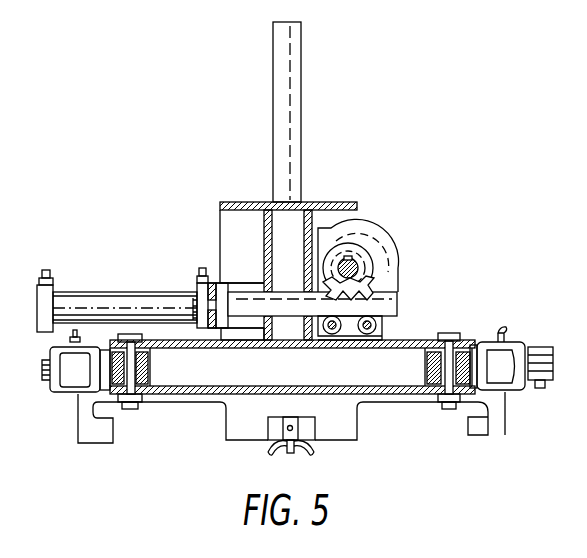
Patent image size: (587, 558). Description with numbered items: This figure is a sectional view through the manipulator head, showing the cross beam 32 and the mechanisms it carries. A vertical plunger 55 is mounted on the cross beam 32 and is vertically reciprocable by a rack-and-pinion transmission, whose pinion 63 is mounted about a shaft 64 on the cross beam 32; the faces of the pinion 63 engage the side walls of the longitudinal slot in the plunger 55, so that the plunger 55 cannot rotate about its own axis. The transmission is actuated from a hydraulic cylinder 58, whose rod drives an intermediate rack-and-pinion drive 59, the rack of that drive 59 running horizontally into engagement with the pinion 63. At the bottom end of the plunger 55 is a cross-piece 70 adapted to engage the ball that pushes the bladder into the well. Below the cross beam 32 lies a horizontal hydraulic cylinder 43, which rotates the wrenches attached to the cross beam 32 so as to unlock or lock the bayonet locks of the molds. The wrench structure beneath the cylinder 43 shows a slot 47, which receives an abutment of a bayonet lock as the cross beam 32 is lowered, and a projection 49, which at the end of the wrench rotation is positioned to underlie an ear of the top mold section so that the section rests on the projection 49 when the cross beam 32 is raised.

The plunger 55 is at (278, 106).
The cross beam 32 is at (237, 180).
The pinion 63 is at (373, 222).
The shaft 64 is at (352, 266).
The intermediate rack-and-pinion drive 59 is at (384, 281).
The hydraulic cylinder 58 is at (130, 298).
The hydraulic cylinder 43 is at (505, 358).
The slot 47 is at (308, 428).
The cross-piece 70 is at (270, 449).
The projection 49 is at (476, 417).